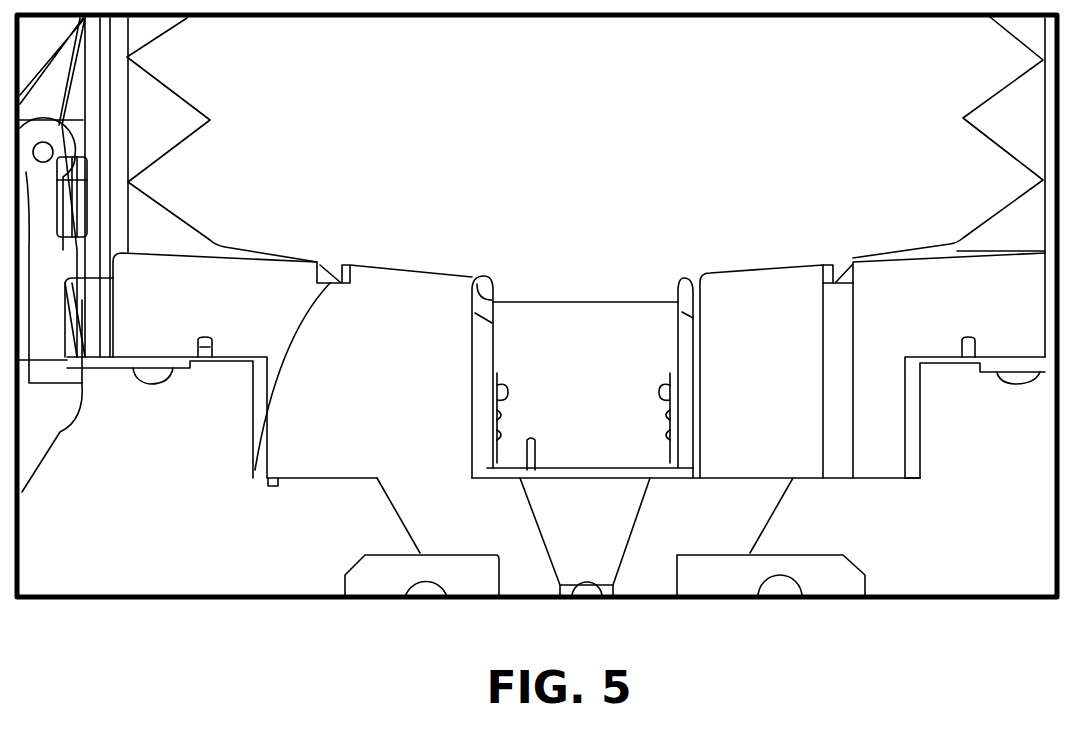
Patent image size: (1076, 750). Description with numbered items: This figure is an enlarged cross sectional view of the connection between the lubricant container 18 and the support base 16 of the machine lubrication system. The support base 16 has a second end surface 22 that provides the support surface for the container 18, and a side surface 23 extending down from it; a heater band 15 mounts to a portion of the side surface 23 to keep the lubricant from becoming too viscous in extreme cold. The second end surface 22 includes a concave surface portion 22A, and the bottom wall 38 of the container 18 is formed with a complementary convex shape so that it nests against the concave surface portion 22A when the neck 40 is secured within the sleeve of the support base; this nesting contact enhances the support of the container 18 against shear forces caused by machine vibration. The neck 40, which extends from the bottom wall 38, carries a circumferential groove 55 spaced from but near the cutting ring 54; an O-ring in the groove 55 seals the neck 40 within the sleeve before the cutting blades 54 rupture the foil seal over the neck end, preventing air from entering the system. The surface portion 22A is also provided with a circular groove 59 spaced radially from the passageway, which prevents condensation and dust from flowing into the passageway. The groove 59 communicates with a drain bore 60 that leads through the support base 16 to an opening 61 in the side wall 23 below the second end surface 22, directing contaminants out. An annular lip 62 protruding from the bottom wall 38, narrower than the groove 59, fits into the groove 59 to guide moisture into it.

The heater band 15 is at (910, 447).
The support base 16 is at (318, 415).
The lubricant container 18 is at (200, 210).
The second end surface 22 is at (220, 255).
The concave surface portion 22A is at (427, 273).
The side surface 23 is at (908, 465).
The bottom wall 38 is at (243, 255).
The neck 40 is at (500, 357).
The cutting ring 54 is at (522, 453).
The circumferential groove 55 is at (675, 393).
The circular groove 59 is at (265, 447).
The drain bore 60 is at (837, 383).
The opening 61 is at (837, 480).
The annular lip 62 is at (843, 266).